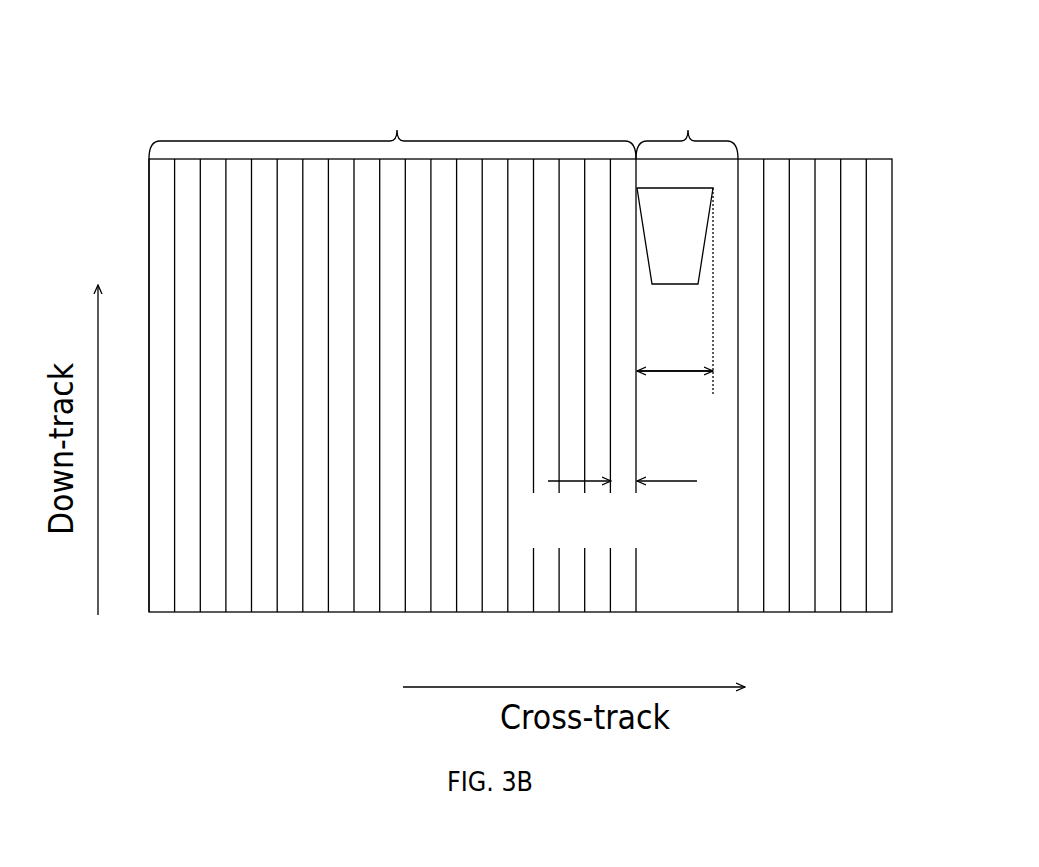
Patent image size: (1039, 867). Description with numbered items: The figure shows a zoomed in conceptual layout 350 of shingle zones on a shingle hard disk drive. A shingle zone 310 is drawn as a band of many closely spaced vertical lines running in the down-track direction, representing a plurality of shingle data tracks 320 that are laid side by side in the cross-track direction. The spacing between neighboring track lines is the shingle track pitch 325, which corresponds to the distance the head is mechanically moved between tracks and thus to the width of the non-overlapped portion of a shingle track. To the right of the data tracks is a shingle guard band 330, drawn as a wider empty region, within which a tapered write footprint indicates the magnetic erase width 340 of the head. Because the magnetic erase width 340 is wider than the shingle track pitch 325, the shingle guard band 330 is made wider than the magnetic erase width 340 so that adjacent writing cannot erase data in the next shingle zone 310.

The shingle zone 310 is at (737, 612).
The shingle data track 320 is at (154, 197).
The shingle track pitch 325 is at (624, 514).
The shingle guard band 330 is at (751, 343).
The magnetic erase width 340 is at (675, 274).
The zoomed in conceptual layout 350 is at (962, 73).